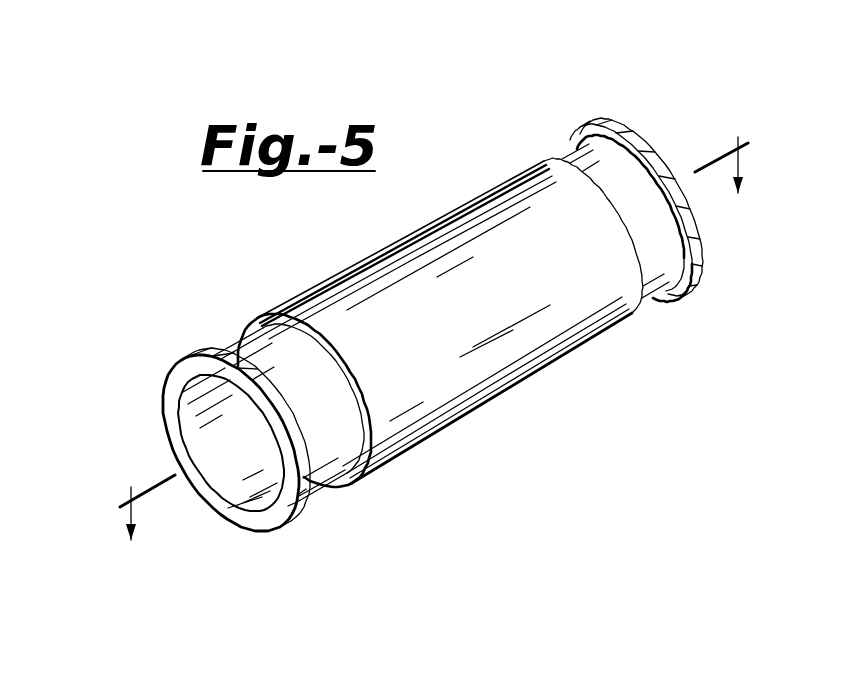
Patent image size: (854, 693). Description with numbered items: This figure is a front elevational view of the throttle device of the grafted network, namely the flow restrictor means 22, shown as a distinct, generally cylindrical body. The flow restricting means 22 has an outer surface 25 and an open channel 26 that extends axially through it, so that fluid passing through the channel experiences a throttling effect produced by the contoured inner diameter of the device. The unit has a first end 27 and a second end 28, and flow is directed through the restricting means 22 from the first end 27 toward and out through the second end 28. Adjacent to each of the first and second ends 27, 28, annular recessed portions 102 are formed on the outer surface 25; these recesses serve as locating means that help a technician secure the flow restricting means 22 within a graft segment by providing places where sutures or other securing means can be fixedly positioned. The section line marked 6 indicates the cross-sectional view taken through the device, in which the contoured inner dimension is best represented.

The flow restrictor means 22 is at (397, 307).
The outer surface 25 is at (403, 232).
The open channel 26 is at (222, 513).
The first end 27 is at (640, 133).
The second end 28 is at (173, 370).
The annular recessed portions 102 is at (322, 500).
The section line 6- 6 is at (435, 355).